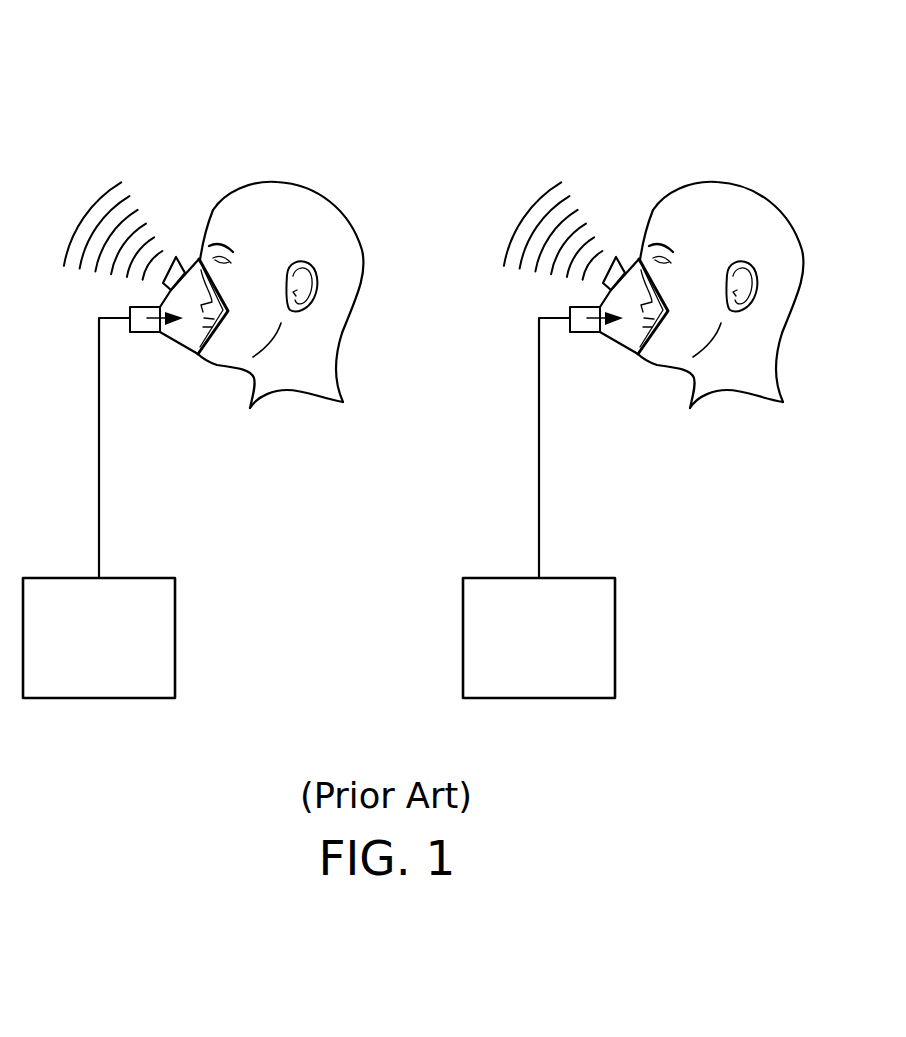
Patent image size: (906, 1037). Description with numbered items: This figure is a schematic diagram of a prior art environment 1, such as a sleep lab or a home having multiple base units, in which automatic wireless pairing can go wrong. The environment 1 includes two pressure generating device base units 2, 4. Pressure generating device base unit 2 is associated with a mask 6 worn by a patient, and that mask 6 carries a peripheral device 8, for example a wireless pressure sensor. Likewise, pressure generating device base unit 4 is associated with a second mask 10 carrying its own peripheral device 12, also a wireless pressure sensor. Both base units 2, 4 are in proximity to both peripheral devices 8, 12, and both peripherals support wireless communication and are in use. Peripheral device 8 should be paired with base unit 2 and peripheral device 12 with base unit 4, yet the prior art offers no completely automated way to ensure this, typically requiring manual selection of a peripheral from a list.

The environment 1 is at (112, 76).
The pressure generating device base unit 2 is at (165, 595).
The pressure generating device base unit 4 is at (569, 508).
The mask 6 is at (177, 347).
The peripheral device 8 is at (176, 258).
The mask 10 is at (619, 339).
The peripheral device 12 is at (624, 231).